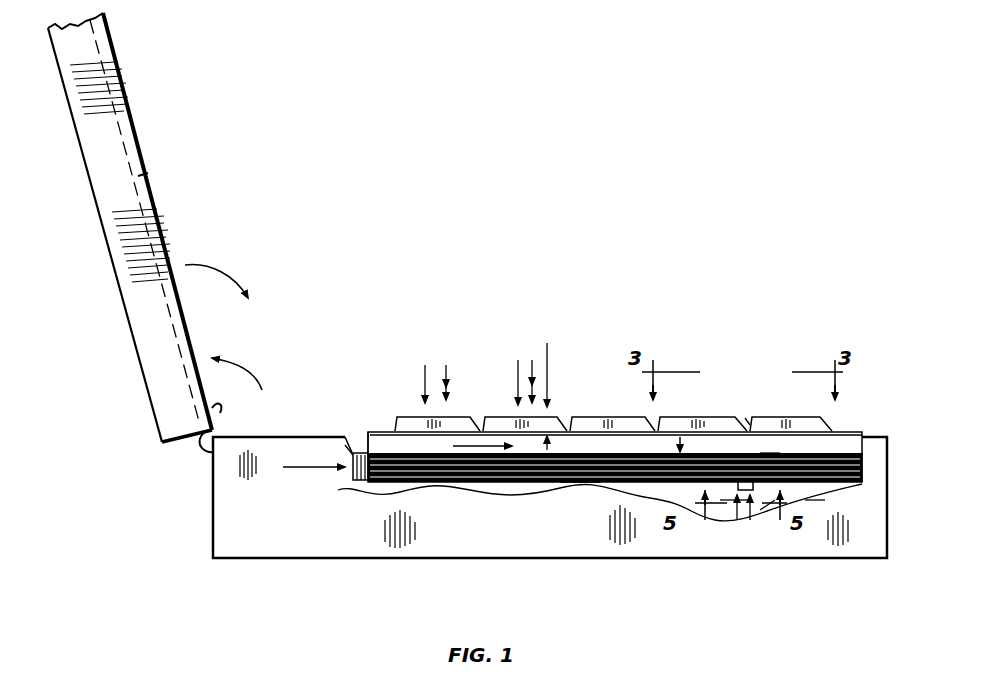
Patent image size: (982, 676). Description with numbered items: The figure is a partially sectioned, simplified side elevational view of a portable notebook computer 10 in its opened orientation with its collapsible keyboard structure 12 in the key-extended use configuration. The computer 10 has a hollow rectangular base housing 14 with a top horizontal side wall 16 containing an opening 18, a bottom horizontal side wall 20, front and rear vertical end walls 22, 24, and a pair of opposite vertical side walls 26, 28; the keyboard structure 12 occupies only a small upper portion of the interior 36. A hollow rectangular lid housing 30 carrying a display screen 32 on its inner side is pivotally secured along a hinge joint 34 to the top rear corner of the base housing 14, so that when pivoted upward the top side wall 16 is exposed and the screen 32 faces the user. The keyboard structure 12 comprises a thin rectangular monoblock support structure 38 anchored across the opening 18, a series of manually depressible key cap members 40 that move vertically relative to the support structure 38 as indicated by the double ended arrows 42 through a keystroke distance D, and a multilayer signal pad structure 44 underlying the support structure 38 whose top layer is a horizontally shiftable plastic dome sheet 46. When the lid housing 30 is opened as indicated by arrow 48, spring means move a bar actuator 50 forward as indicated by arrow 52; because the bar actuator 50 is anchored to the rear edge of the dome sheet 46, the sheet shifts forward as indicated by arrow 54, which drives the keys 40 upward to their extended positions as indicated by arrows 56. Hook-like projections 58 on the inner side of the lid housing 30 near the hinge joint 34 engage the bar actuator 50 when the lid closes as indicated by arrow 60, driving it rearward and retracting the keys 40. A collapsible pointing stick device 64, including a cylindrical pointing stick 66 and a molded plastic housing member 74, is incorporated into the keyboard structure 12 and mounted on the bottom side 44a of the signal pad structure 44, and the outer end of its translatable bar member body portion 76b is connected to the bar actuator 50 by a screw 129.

The portable notebook computer 10 is at (182, 505).
The collapsible keyboard structure 12 is at (578, 410).
The base housing 14 is at (367, 565).
The top horizontal side wall 16 is at (258, 437).
The opening 18 is at (368, 437).
The bottom horizontal side wall 20 is at (556, 560).
The front vertical end wall 22 is at (887, 548).
The rear vertical end wall 24 is at (212, 528).
The vertical side wall 26 is at (500, 533).
The vertical side wall 28 is at (812, 503).
The lid housing 30 is at (163, 230).
The display screen 32 is at (150, 176).
The hinge joint 34 is at (199, 452).
The interior 36 is at (768, 512).
The monoblock support structure 38 is at (845, 440).
The key cap members 40 is at (400, 417).
The double ended arrows 42 is at (446, 372).
The signal pad structure 44 is at (680, 437).
The bottom side of signal pad structure 44a is at (862, 482).
The dome sheet 46 is at (770, 455).
The arrow 48 is at (262, 378).
The bar actuator 50 is at (350, 453).
The arrow 52 is at (300, 467).
The arrow 54 is at (467, 446).
The arrows 56 is at (420, 385).
The hook-like projections 58 is at (222, 408).
The arrow 60 is at (222, 262).
The collapsible pointing stick device 64 is at (740, 503).
The pointing stick 66 is at (748, 420).
The housing member 74 is at (745, 495).
The bar member body portion 76b is at (548, 482).
The screw 129 is at (350, 485).
The keystroke distance D is at (545, 382).